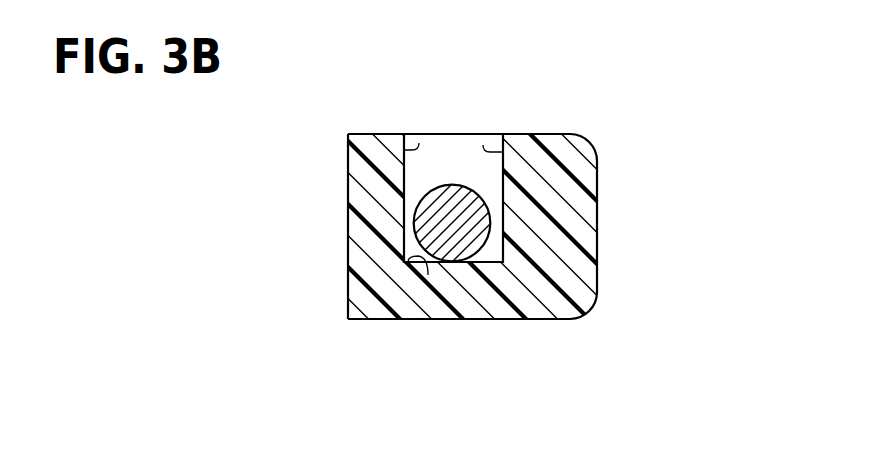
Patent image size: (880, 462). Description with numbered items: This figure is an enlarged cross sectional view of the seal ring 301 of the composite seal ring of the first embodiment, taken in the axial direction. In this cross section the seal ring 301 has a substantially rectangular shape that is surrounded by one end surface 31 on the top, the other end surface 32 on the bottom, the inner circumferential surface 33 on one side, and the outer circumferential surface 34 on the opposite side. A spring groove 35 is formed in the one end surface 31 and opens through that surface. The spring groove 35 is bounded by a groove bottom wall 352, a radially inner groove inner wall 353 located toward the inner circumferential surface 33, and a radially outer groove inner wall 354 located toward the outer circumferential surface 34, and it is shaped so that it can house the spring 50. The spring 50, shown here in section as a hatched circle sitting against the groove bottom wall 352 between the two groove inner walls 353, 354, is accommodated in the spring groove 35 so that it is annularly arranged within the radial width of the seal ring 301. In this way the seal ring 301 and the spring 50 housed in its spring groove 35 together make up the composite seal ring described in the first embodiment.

The seal ring 301 is at (638, 137).
The one end surface 31 is at (542, 134).
The other end surface 32 is at (543, 320).
The inner circumferential surface 33 is at (347, 253).
The outer circumferential surface 34 is at (597, 240).
The spring groove 35 is at (448, 175).
The groove bottom wall 352 is at (428, 275).
The radially inner groove inner wall 353 is at (419, 143).
The radially outer groove inner wall 354 is at (483, 145).
The spring 50 is at (438, 220).